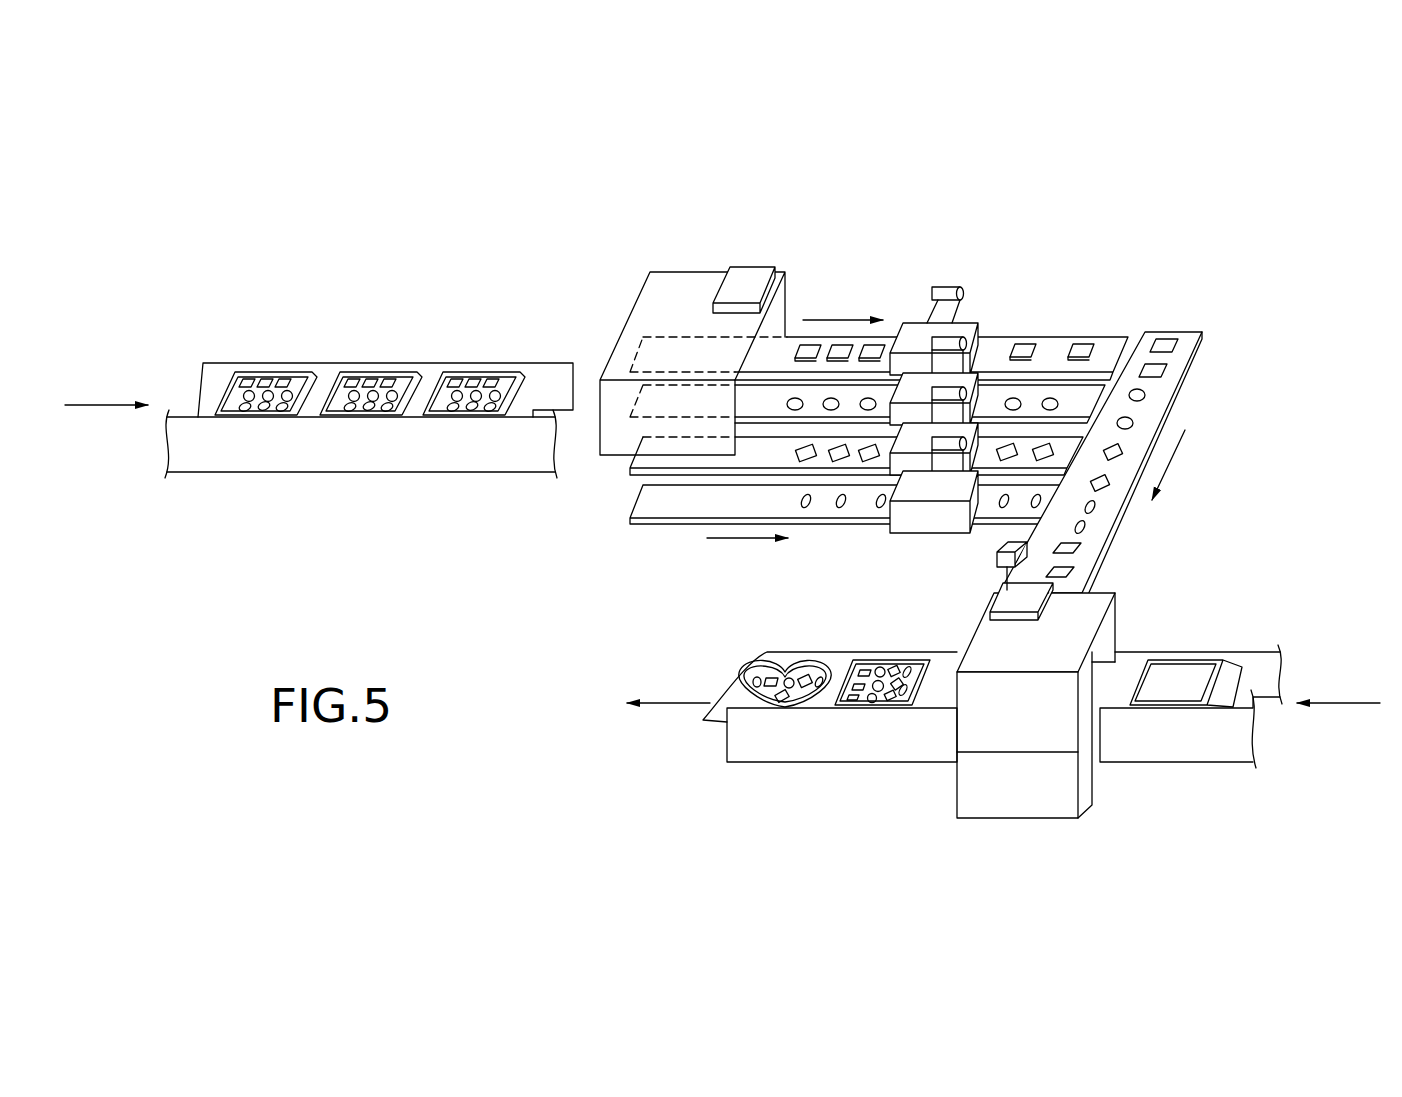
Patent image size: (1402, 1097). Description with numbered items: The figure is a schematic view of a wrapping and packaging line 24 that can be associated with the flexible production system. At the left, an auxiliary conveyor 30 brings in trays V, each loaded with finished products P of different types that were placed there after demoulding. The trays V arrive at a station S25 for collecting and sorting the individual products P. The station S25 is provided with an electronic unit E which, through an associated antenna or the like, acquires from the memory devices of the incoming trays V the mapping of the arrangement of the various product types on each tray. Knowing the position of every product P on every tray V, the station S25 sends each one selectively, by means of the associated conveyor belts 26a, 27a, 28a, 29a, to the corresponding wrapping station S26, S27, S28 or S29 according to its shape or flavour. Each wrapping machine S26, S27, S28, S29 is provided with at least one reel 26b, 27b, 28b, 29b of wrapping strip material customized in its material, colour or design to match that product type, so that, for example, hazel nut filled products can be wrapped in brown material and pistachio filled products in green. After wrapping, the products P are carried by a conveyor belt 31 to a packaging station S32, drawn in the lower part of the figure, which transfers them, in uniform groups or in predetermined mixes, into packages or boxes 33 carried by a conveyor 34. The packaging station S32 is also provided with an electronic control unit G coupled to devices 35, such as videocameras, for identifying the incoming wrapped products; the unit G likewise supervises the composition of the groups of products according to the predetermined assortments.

The wrapping and packaging line 24 is at (1108, 278).
The conveyor belt 26a is at (793, 343).
The conveyor belt 27a is at (823, 397).
The conveyor belt 28a is at (658, 462).
The conveyor belt 29a is at (698, 503).
The reel of wrapping strip material 26b is at (942, 290).
The reel of wrapping strip material 27b is at (952, 340).
The reel of wrapping strip material 28b is at (953, 390).
The reel of wrapping strip material 29b is at (953, 440).
The collecting and sorting station S25 is at (678, 302).
The wrapping station S26 is at (920, 335).
The wrapping station S27 is at (908, 390).
The wrapping station S28 is at (897, 467).
The wrapping station S29 is at (907, 513).
The packaging station S32 is at (1068, 623).
The auxiliary conveyor 30 is at (210, 388).
The conveyor belt 31 is at (1157, 393).
The packages or boxes 33 is at (873, 670).
The conveyor 34 is at (940, 697).
The identifying devices 35 is at (1000, 557).
The electronic unit E is at (747, 287).
The electronic control unit G is at (1053, 590).
The products P is at (387, 377).
The trays V is at (293, 383).